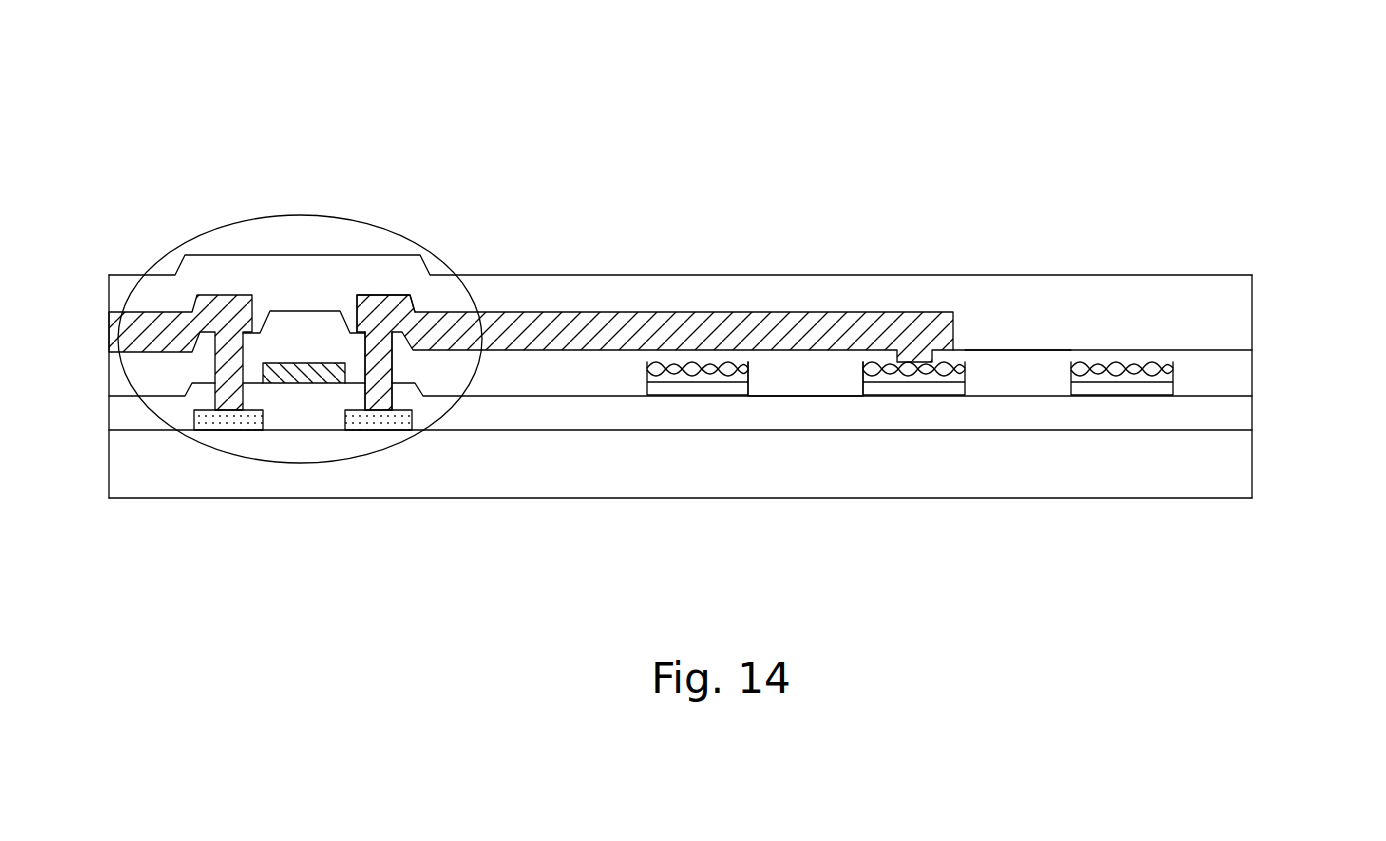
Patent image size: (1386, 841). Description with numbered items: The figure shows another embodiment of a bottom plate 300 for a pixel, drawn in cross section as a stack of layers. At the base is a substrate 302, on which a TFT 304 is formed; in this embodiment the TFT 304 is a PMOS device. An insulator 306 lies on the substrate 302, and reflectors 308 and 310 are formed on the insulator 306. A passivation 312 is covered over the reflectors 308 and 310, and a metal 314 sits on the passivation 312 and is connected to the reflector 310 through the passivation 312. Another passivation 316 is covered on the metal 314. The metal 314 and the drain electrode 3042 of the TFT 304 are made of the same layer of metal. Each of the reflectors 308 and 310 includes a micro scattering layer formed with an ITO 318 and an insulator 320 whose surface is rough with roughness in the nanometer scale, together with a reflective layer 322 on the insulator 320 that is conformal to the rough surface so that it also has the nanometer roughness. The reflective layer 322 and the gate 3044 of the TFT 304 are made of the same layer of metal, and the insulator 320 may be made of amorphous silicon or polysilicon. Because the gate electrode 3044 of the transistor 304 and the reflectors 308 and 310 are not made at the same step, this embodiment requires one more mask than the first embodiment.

The bottom plate 300 is at (1243, 113).
The substrate 302 is at (1243, 470).
The TFT 304 is at (303, 215).
The drain electrode 3042 is at (383, 293).
The gate electrode 3044 is at (305, 363).
The insulator 306 is at (1243, 417).
The reflector 308 is at (640, 348).
The reflector 310 is at (986, 352).
The passivation 312 is at (1243, 377).
The metal 314 is at (710, 309).
The passivation 316 is at (1243, 307).
The ITO 318 is at (863, 395).
The insulator 320 is at (863, 377).
The reflective layer 322 is at (750, 365).